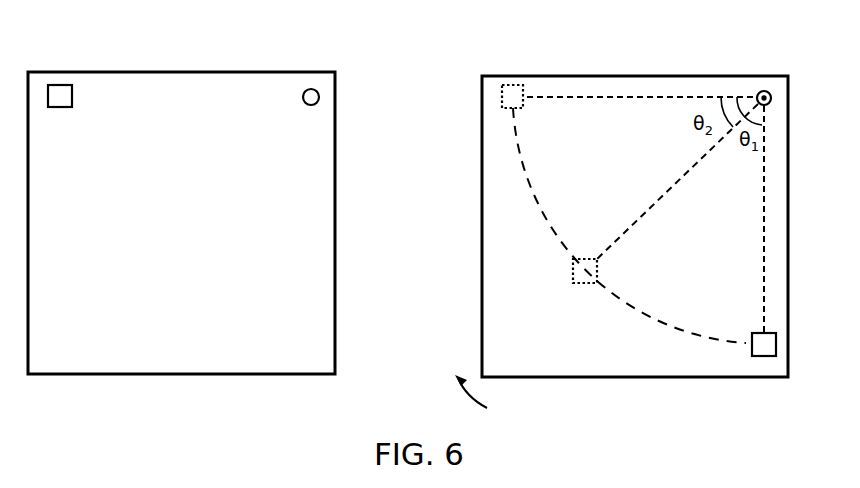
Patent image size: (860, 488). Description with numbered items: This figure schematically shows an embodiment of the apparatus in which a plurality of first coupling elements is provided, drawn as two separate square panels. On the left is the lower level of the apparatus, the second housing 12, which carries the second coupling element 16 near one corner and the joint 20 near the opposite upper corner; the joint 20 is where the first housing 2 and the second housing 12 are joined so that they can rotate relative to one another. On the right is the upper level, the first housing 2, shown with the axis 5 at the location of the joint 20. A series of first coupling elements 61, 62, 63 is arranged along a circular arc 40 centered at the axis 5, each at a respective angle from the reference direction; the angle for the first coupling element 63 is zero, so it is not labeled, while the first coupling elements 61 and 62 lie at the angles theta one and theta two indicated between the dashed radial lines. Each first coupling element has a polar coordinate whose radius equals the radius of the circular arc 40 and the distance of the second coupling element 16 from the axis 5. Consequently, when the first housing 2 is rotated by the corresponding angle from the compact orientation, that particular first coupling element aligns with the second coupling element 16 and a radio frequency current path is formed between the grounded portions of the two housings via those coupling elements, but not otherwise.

The second housing 12 is at (228, 72).
The second coupling element 16 is at (72, 95).
The joint 20 is at (313, 88).
The first housing 2 is at (681, 76).
The axis 5 is at (771, 100).
The first coupling element 63 is at (524, 100).
The first coupling element 62 is at (587, 272).
The first coupling element 61 is at (757, 332).
The circular arc 40 is at (538, 209).